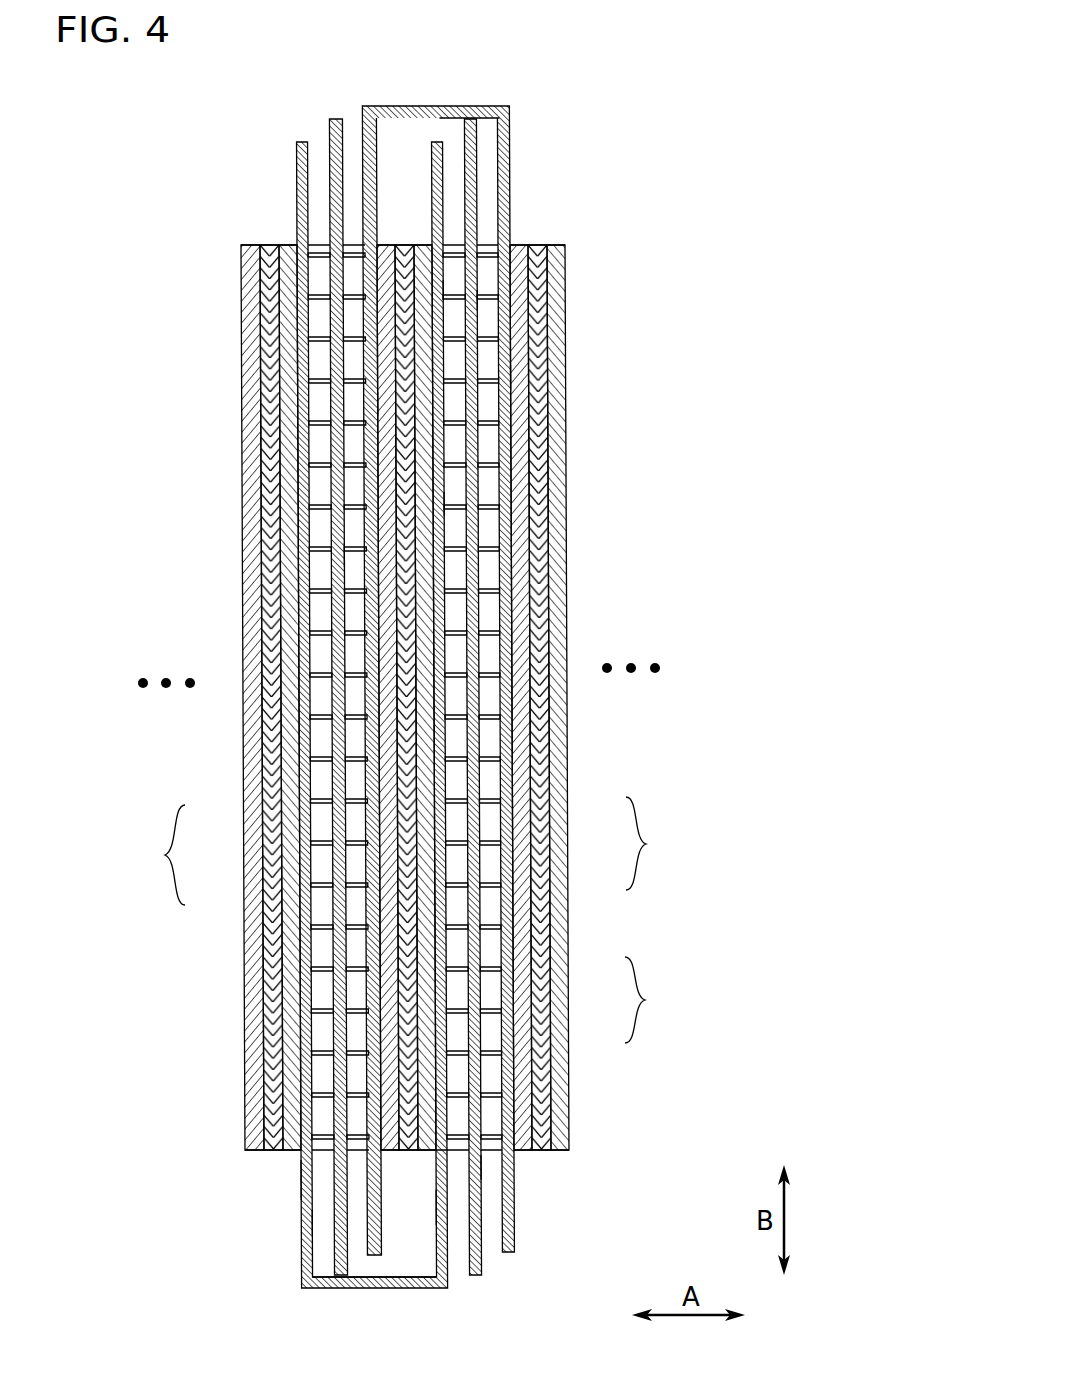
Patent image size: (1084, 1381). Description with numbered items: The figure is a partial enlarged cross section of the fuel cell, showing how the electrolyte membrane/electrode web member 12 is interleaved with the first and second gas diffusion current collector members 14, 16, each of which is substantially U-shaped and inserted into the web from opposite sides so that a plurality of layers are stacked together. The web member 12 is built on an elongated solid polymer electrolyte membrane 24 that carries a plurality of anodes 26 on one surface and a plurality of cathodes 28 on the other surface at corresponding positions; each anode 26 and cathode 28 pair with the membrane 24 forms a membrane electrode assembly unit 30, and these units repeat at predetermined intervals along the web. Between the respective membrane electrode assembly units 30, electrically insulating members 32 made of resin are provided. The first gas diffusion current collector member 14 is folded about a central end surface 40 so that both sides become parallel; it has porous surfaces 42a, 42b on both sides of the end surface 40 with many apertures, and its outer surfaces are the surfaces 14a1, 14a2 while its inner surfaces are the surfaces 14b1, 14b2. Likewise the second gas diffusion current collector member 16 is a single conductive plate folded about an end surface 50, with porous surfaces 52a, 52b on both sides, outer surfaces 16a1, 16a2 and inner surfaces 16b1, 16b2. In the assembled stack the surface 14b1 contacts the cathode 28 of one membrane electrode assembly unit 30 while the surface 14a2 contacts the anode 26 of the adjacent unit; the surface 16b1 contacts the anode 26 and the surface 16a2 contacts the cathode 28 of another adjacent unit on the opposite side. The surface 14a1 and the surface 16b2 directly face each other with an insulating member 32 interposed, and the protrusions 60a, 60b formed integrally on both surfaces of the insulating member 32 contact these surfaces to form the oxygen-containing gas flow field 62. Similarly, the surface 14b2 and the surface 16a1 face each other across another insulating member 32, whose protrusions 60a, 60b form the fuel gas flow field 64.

The electrolyte membrane/electrode web member 12 is at (568, 245).
The first gas diffusion current collector member 14 is at (419, 1288).
The surface 14a1 is at (474, 1163).
The surface 14a2 is at (301, 1177).
The surface 14b1 is at (437, 1224).
The surface 14b2 is at (314, 1238).
The second gas diffusion current collector member 16 is at (503, 105).
The surface 16a1 is at (345, 135).
The surface 16a2 is at (511, 140).
The surface 16b1 is at (378, 157).
The surface 16b2 is at (488, 162).
The solid polymer electrolyte membrane 24 is at (267, 840).
The anode 26 is at (288, 875).
The cathode 28 is at (250, 812).
The membrane electrode assembly unit 30 is at (402, 920).
The insulating member 32 is at (328, 190).
The end surface 40 is at (364, 1290).
The porous surface 42a is at (445, 504).
The porous surface 42b is at (342, 555).
The end surface 50 is at (473, 105).
The porous surface 52a is at (379, 404).
The porous surface 52b is at (511, 378).
The protrusion 60a is at (483, 289).
The protrusion 60b is at (452, 296).
The oxygen-containing gas flow field 62 is at (456, 690).
The fuel gas flow field 64 is at (352, 652).